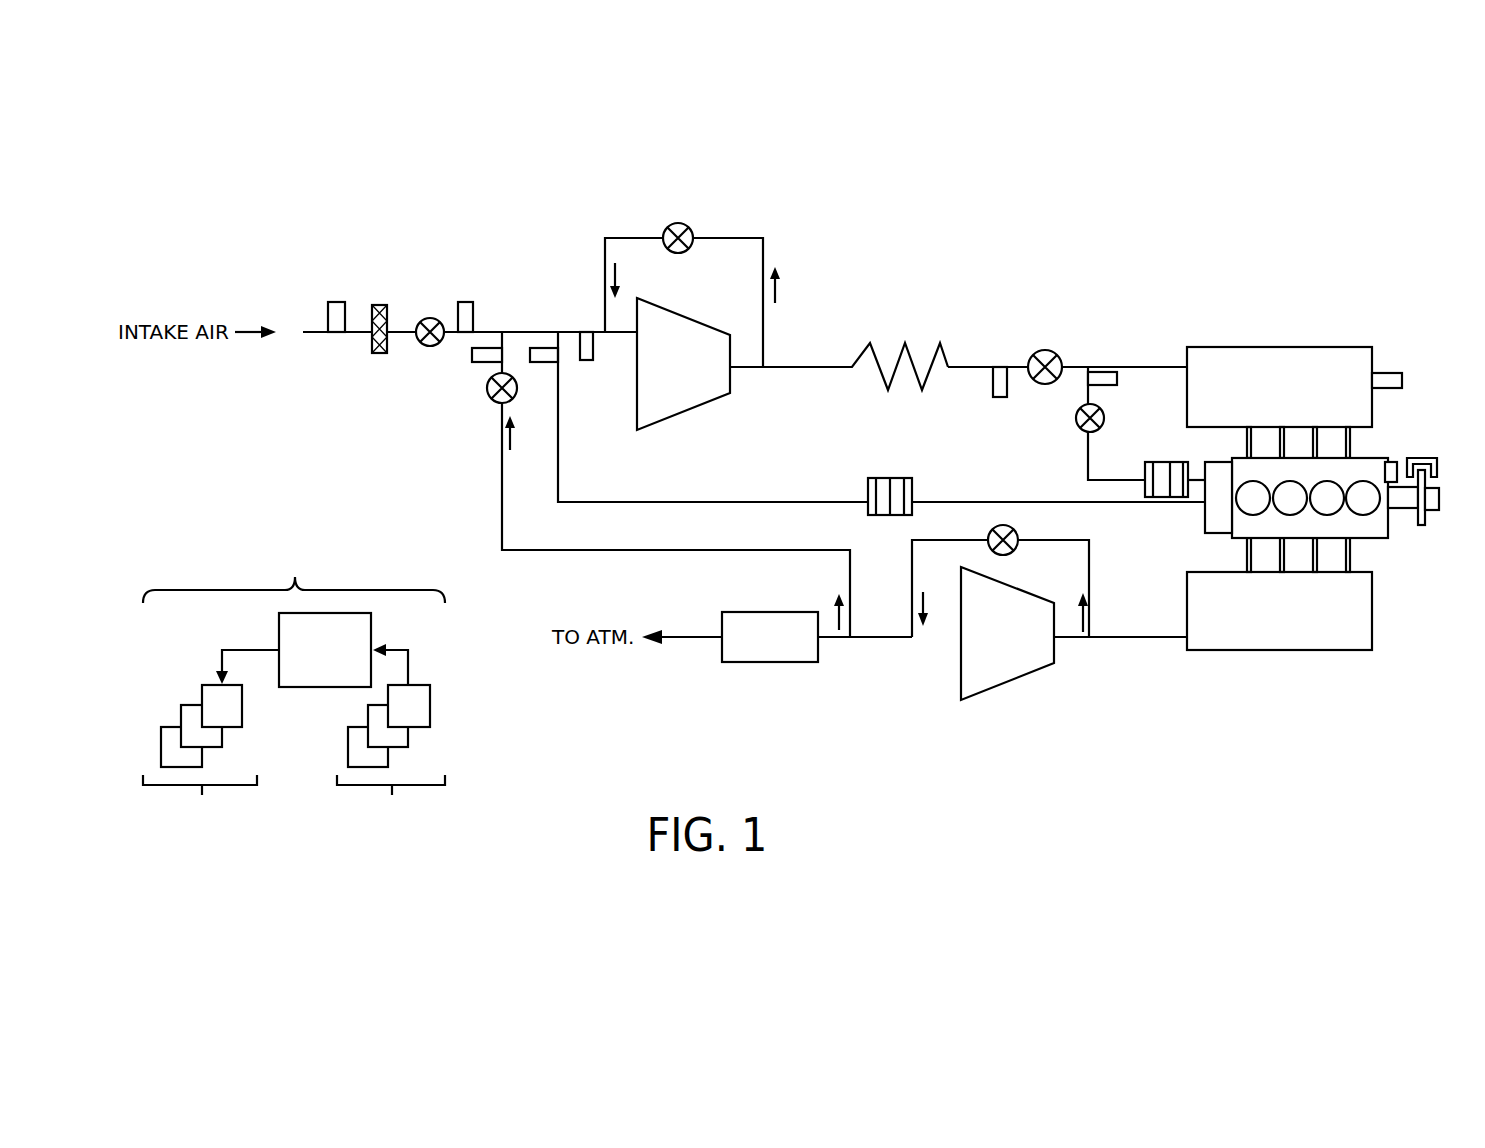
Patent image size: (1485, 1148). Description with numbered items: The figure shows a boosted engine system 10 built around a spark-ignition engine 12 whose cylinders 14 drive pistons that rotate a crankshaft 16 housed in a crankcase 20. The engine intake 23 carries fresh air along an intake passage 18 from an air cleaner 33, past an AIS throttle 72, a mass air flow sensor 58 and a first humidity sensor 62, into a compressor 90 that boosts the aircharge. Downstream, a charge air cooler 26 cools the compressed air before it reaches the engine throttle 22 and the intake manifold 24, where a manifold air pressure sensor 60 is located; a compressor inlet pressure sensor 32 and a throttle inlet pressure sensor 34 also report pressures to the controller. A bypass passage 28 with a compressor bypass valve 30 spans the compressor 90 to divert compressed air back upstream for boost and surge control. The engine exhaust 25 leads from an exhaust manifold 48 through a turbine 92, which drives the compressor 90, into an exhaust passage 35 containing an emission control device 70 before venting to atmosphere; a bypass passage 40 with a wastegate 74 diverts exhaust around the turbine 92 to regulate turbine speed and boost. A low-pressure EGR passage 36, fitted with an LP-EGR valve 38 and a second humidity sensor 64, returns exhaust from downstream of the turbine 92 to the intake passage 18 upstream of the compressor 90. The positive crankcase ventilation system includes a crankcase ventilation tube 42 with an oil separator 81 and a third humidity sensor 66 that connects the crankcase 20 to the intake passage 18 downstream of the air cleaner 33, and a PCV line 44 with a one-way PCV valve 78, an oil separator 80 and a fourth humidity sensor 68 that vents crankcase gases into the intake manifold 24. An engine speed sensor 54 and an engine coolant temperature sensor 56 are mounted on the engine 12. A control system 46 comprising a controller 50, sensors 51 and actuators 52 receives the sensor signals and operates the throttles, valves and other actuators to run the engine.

The engine system 10 is at (430, 175).
The engine 12 is at (1364, 547).
The cylinders 14 is at (1245, 506).
The crankshaft 16 is at (1432, 510).
The intake passage 18 is at (316, 330).
The crankcase 20 is at (1229, 507).
The engine throttle 22 is at (1045, 350).
The engine intake 23 is at (1039, 278).
The intake manifold 24 is at (1268, 398).
The engine exhaust 25 is at (1152, 669).
The charge air cooler 26 is at (934, 356).
The bypass passage 28 is at (617, 236).
The compressor bypass valve 30 is at (673, 222).
The compressor inlet pressure sensor 32 is at (590, 362).
The air cleaner 33 is at (376, 356).
The throttle inlet pressure sensor 34 is at (1000, 397).
The exhaust passage 35 is at (695, 638).
The LP-EGR passage 36 is at (568, 552).
The LP-EGR valve 38 is at (492, 400).
The bypass passage 40 is at (1062, 538).
The crankcase ventilation tube 42 is at (688, 504).
The PCV line 44 is at (1088, 458).
The control system 46 is at (294, 559).
The exhaust manifold 48 is at (1268, 623).
The controller 50 is at (313, 661).
The sensors 51 is at (391, 750).
The actuators 52 is at (211, 754).
The engine speed sensor 54 is at (1435, 456).
The engine coolant temperature sensor 56 is at (1396, 461).
The mass air flow sensor 58 is at (344, 302).
The manifold air pressure sensor 60 is at (1405, 380).
The first humidity sensor 62 is at (472, 302).
The second humidity sensor 64 is at (472, 361).
The third humidity sensor 66 is at (541, 362).
The fourth humidity sensor 68 is at (1118, 380).
The emission control device 70 is at (758, 648).
The AIS throttle 72 is at (428, 318).
The wastegate valve 74 is at (1008, 525).
The PCV valve 78 is at (1080, 410).
The oil separator 80 is at (1184, 460).
The oil separator 81 is at (882, 478).
The compressor 90 is at (671, 376).
The turbine 92 is at (995, 644).